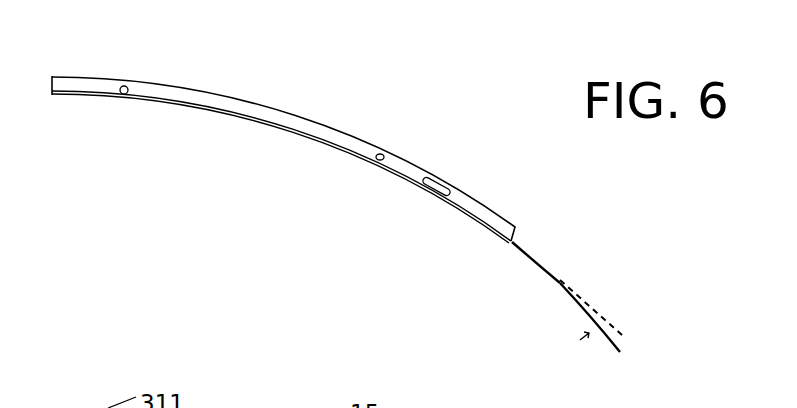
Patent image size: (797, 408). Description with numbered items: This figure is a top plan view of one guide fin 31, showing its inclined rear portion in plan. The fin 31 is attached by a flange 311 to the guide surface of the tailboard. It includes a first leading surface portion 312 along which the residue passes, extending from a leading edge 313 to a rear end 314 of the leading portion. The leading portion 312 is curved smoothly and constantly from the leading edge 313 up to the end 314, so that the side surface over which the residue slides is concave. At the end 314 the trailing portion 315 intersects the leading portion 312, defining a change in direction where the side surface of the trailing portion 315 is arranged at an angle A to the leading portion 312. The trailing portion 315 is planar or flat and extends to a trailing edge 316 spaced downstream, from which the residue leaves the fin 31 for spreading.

The flange 311 is at (323, 135).
The leading surface portion 312 is at (235, 115).
The leading edge 313 is at (58, 97).
The guide fin 31 is at (437, 197).
The rear end of the leading portion 314 is at (560, 280).
The trailing portion 315 is at (588, 310).
The trailing edge 316 is at (620, 352).
The angle A is at (607, 323).